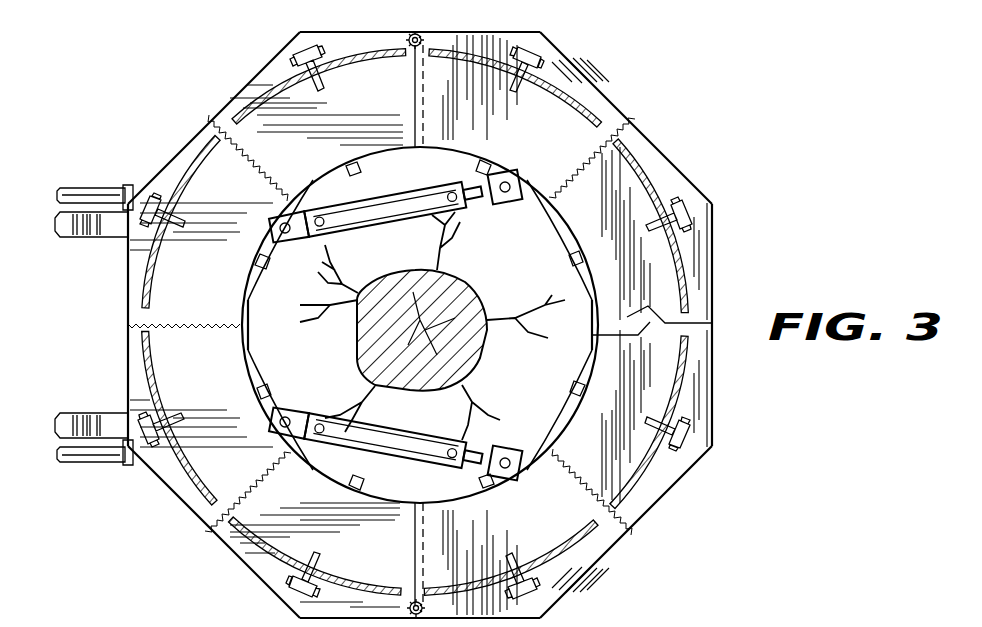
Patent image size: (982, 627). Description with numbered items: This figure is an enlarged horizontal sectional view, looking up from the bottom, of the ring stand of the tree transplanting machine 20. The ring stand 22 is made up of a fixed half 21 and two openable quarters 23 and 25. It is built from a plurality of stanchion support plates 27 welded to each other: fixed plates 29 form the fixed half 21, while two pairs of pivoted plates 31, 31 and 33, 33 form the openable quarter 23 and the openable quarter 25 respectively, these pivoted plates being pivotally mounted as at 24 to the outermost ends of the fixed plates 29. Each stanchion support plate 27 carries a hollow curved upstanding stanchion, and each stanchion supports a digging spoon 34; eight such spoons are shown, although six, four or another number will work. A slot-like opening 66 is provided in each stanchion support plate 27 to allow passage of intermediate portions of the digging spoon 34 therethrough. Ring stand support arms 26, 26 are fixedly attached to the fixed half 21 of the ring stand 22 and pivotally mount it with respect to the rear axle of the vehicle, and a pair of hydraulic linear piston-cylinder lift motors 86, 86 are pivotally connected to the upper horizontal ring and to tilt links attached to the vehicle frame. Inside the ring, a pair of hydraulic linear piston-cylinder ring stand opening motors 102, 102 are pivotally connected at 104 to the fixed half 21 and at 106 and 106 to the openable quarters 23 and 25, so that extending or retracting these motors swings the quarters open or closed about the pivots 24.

The tree transplanting machine 20 is at (737, 430).
The fixed half 21 is at (185, 135).
The ring stand 22 is at (684, 175).
The openable quarter 23 is at (552, 62).
The pivot 24 is at (410, 47).
The openable quarter 25 is at (640, 507).
The ring stand support arm 26 is at (100, 240).
The stanchion support plate 27 is at (165, 501).
The fixed plate 29 is at (128, 288).
The pivoted plate 31 is at (598, 106).
The pivoted plate 33 is at (680, 470).
The digging spoon 34 is at (232, 543).
The slot-like opening 66 is at (656, 214).
The hydraulic linear piston-cylinder lift motor 86 is at (76, 186).
The hydraulic linear piston-cylinder ring stand opening motor 102 is at (355, 224).
The pivotal connection 104 is at (276, 231).
The pivotal connection 106 is at (520, 184).